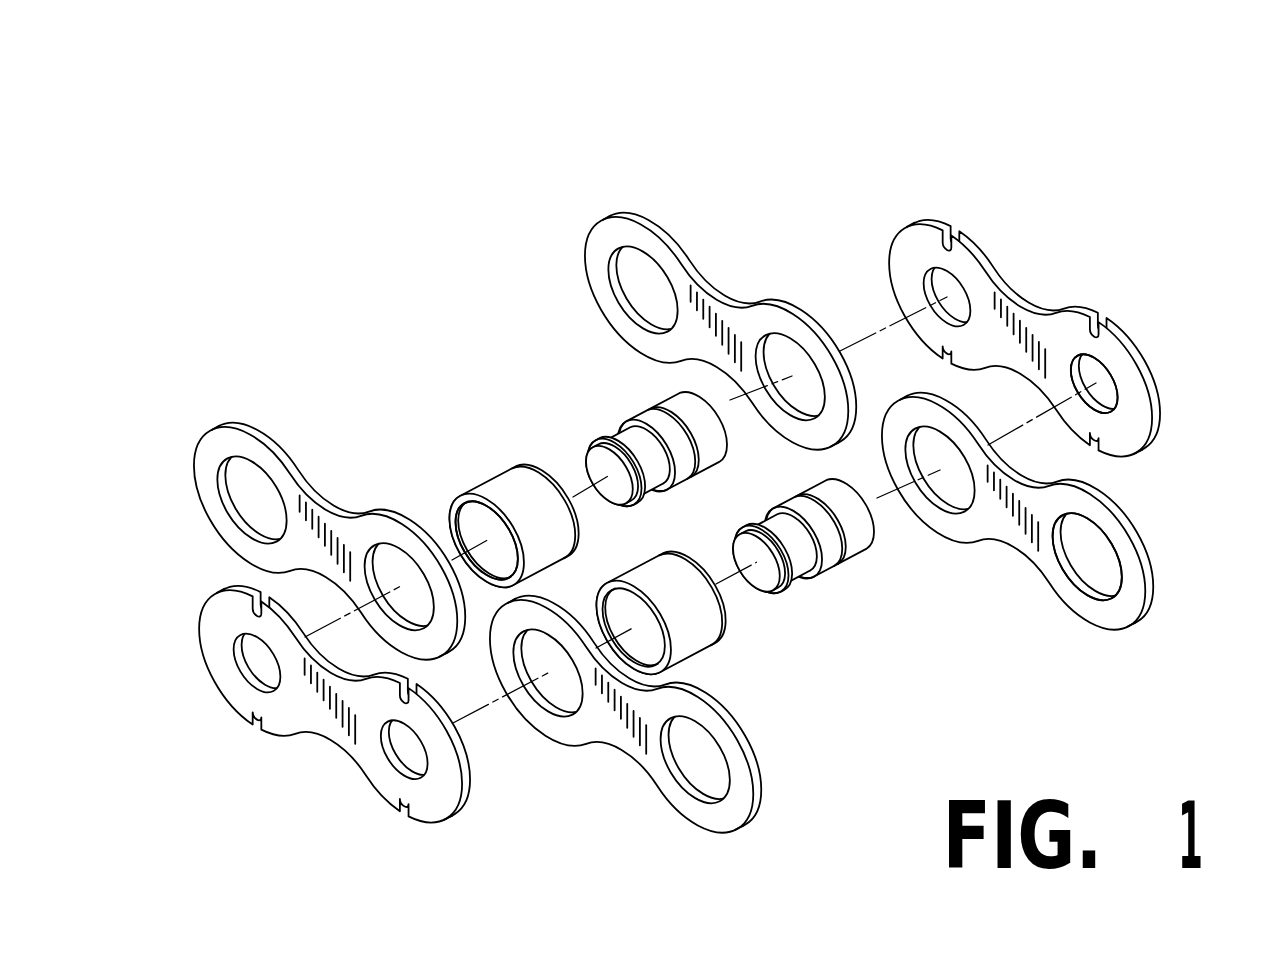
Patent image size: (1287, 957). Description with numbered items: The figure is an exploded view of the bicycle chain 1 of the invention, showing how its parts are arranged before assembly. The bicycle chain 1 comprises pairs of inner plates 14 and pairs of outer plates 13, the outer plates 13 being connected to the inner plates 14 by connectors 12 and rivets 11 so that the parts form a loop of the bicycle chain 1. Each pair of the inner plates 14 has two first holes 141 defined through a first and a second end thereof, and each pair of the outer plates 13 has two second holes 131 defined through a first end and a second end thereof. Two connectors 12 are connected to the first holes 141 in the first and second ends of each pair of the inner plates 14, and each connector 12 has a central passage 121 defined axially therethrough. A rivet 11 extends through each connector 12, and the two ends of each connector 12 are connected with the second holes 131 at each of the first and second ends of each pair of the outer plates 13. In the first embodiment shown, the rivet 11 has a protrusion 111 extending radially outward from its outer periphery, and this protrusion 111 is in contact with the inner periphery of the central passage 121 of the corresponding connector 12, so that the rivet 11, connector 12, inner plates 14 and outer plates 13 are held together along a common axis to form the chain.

The bicycle chain 1 is at (715, 457).
The rivet 11 is at (744, 481).
The protrusion 111 is at (835, 566).
The connector 12 is at (564, 569).
The central passage 121 is at (473, 523).
The outer plate 13 is at (1063, 338).
The second hole 131 is at (1105, 388).
The inner plate 14 is at (1046, 511).
The first hole 141 is at (1100, 560).